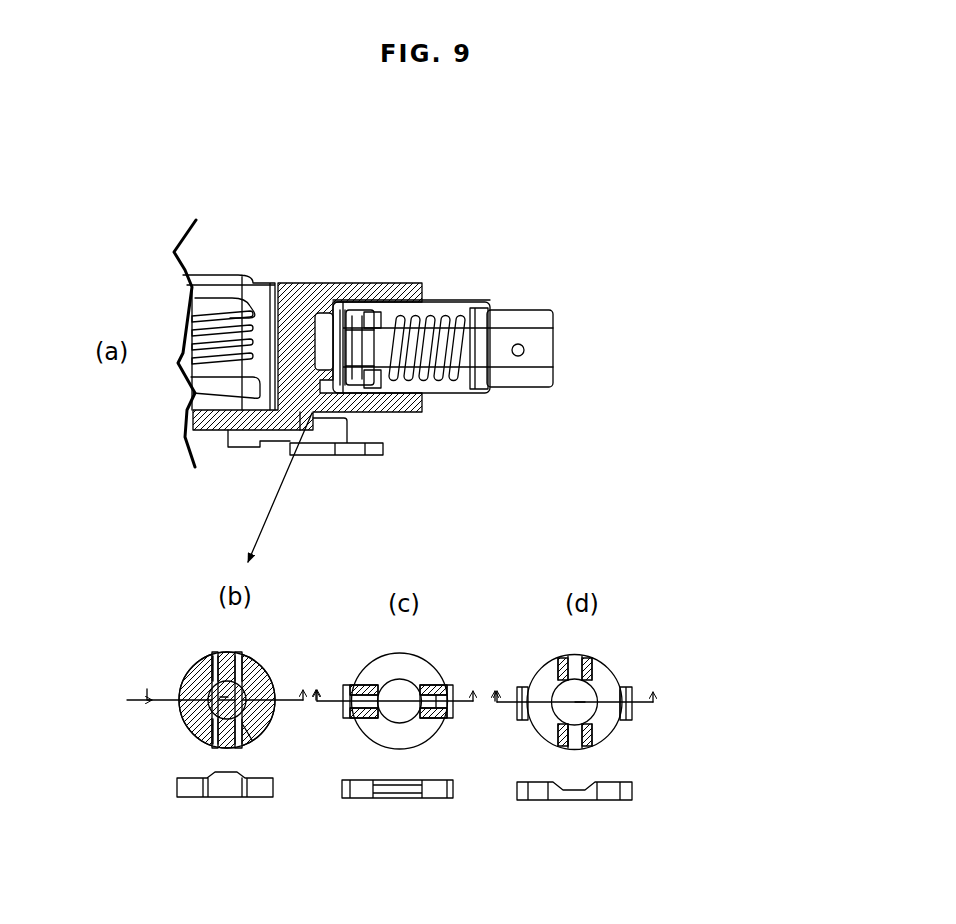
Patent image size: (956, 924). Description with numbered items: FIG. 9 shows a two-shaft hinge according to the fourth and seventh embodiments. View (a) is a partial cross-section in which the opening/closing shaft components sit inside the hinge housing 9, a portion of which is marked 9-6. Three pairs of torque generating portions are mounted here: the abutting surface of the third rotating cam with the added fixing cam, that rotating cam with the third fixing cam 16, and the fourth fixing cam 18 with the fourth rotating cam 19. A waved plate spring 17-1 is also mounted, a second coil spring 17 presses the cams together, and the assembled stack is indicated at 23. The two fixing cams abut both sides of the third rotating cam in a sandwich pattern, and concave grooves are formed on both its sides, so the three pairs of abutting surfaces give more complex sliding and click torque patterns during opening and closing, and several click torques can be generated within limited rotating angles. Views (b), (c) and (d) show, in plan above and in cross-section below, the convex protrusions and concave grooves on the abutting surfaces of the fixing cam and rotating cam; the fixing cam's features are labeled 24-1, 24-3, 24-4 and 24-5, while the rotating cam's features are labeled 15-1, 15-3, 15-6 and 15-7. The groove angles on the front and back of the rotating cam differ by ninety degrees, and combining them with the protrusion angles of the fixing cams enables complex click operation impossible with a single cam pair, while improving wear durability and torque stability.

The hinge housing 9 is at (301, 289).
The housing step portion 9-6 is at (298, 433).
The through hole 15-1 is at (584, 702).
The slit 15-3 is at (575, 740).
The projection 15-6 is at (634, 716).
The engaging portion 15-7 is at (438, 705).
The third fixing cam 16 is at (389, 356).
The second coil spring 17 is at (443, 301).
The waved plate spring 17-1 is at (345, 303).
The fourth fixing cam 18 is at (468, 357).
The fourth rotating cam 19 is at (488, 353).
The spring unit 23 is at (473, 290).
The center hole 24-1 is at (222, 698).
The lower groove 24-3 is at (217, 732).
The upper groove 24-4 is at (210, 672).
The outer periphery 24-5 is at (252, 736).